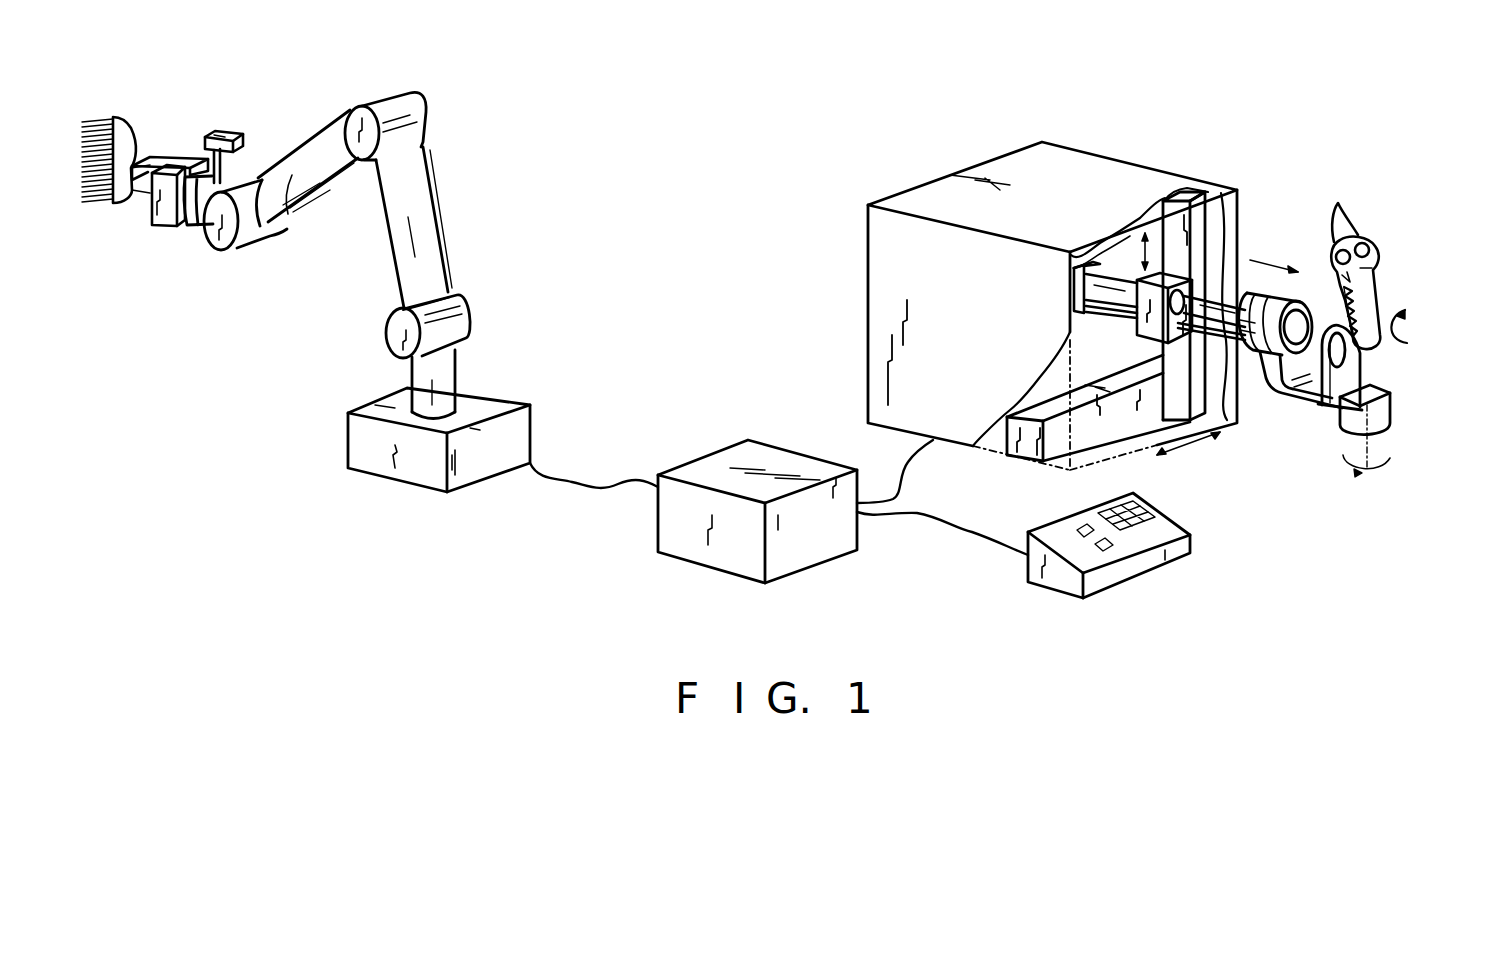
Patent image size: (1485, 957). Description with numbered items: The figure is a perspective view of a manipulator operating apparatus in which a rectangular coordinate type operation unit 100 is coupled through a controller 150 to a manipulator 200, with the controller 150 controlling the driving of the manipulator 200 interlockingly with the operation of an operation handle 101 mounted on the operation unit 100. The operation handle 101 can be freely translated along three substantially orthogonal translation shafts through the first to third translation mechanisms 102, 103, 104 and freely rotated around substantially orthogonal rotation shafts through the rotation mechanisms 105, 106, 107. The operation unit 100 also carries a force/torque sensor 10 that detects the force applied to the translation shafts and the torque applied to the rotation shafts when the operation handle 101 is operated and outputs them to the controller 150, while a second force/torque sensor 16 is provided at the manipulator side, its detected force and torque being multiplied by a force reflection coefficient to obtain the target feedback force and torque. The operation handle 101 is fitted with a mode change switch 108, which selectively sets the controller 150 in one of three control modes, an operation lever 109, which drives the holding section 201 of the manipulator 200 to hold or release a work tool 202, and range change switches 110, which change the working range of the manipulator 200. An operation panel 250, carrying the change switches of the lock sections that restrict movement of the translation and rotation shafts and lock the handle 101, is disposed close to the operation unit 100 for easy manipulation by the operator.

The force/torque sensor 10 is at (1370, 347).
The force/torque sensor 16 is at (192, 226).
The rectangular coordinate type operation unit 100 is at (1118, 170).
The operation handle 101 is at (1376, 253).
The first translation mechanism 102 is at (1208, 232).
The second translation mechanism 103 is at (1233, 403).
The third translation mechanism 104 is at (1115, 425).
The rotation mechanism 105 is at (1260, 373).
The rotation mechanism 106 is at (1333, 405).
The rotation mechanism 107 is at (1390, 423).
The mode change switch 108 is at (1350, 278).
The operation lever 109 is at (1340, 302).
The range change switches 110 is at (1341, 238).
The controller 150 is at (783, 460).
The manipulator 200 is at (456, 172).
The holding section 201 is at (160, 155).
The work tool 202 is at (122, 133).
The operation panel 250 is at (1052, 587).